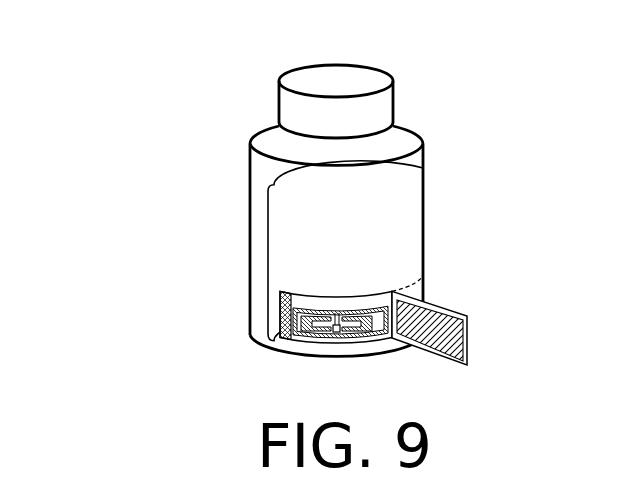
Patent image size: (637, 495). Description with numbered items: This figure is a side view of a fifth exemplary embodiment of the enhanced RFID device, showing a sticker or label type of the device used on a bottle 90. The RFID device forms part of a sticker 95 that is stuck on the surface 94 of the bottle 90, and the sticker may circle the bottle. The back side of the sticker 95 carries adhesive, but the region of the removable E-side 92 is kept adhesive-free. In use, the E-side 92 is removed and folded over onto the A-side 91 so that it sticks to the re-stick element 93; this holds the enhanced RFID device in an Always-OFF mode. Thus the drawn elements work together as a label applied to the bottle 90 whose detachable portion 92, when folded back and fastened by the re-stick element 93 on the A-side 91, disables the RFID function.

The bottle 90 is at (261, 198).
The A-side 91 is at (339, 279).
The removable E-side 92 is at (437, 312).
The re-stick element 93 is at (288, 297).
The surface 94 is at (408, 166).
The sticker 95 is at (281, 218).